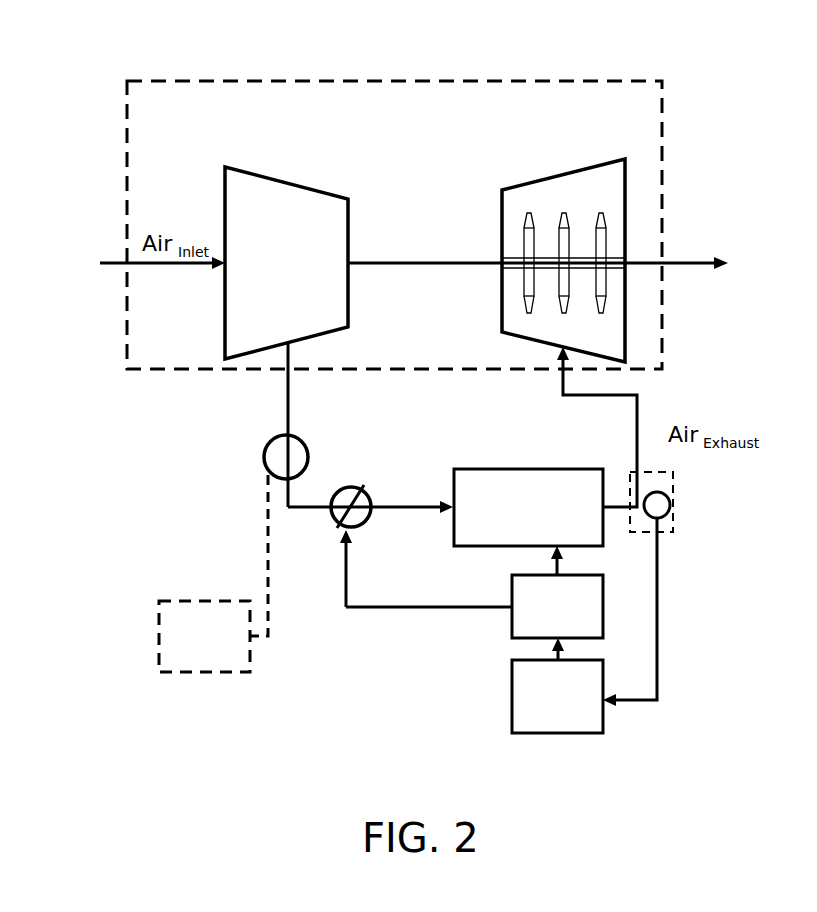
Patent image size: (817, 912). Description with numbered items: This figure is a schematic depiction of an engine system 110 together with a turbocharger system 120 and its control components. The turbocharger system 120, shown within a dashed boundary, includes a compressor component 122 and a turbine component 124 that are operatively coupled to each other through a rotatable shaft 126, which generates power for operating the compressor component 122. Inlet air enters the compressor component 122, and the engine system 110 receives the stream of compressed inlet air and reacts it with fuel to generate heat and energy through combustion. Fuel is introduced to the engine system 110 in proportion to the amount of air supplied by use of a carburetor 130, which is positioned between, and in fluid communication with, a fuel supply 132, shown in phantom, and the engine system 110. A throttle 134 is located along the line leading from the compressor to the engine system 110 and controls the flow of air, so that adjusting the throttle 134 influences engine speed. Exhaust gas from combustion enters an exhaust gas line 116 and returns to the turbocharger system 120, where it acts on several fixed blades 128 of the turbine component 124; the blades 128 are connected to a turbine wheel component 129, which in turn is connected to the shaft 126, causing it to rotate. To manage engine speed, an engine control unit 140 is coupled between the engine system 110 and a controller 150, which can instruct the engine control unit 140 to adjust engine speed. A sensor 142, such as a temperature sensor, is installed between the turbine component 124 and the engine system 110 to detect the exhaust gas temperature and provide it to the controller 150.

The engine system 110 is at (528, 507).
The exhaust gas line 116 is at (617, 510).
The turbocharger system 120 is at (262, 77).
The compressor component 122 is at (240, 337).
The turbine component 124 is at (517, 188).
The rotatable shaft 126 is at (368, 260).
The fixed blades 128 is at (522, 278).
The turbine wheel component 129 is at (610, 262).
The carburetor 130 is at (265, 452).
The fuel supply 132 is at (213, 573).
The throttle 134 is at (340, 532).
The engine control unit 140 is at (557, 592).
The sensor 142 is at (667, 518).
The controller 150 is at (557, 685).